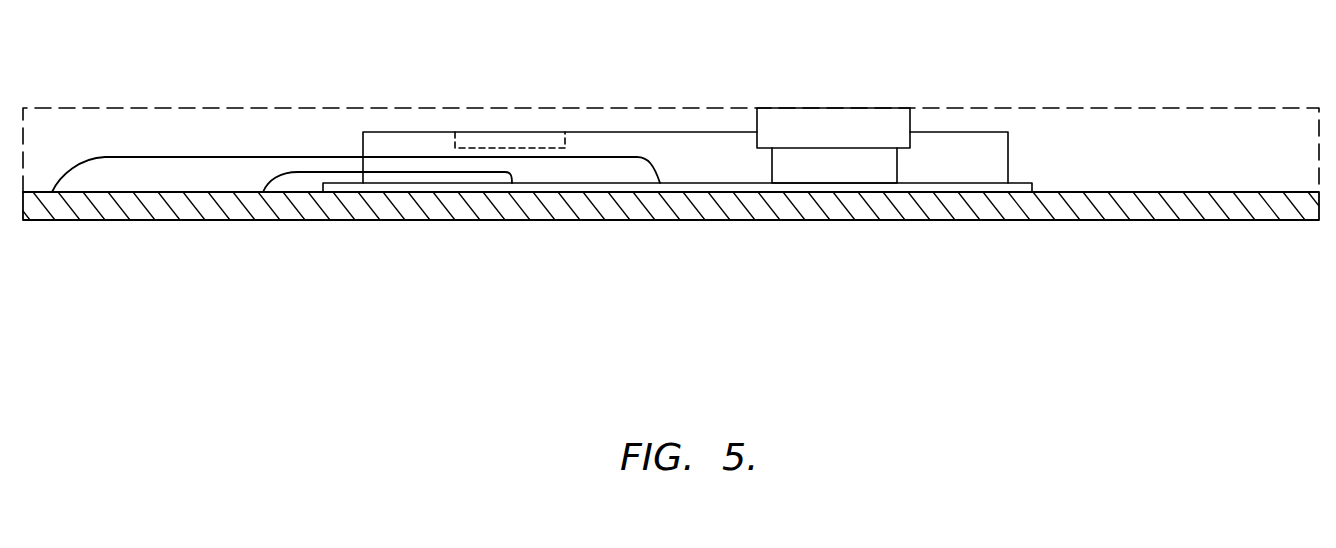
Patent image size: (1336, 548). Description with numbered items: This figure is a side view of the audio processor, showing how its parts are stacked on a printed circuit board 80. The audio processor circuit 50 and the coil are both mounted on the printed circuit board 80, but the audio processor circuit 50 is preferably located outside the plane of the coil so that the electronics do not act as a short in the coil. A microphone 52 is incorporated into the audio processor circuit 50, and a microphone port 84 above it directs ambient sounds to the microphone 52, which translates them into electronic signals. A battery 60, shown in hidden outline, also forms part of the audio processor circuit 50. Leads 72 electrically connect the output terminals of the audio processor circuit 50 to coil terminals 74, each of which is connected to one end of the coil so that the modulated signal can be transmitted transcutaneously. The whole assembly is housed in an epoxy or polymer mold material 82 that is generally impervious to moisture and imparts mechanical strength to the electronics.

The audio processor circuit 50 is at (1024, 175).
The microphone 52 is at (842, 163).
The battery 60 is at (498, 128).
The leads 72 is at (211, 155).
The coil terminals 74 is at (53, 192).
The printed circuit board 80 is at (220, 238).
The mold material 82 is at (1193, 160).
The microphone port 84 is at (828, 104).